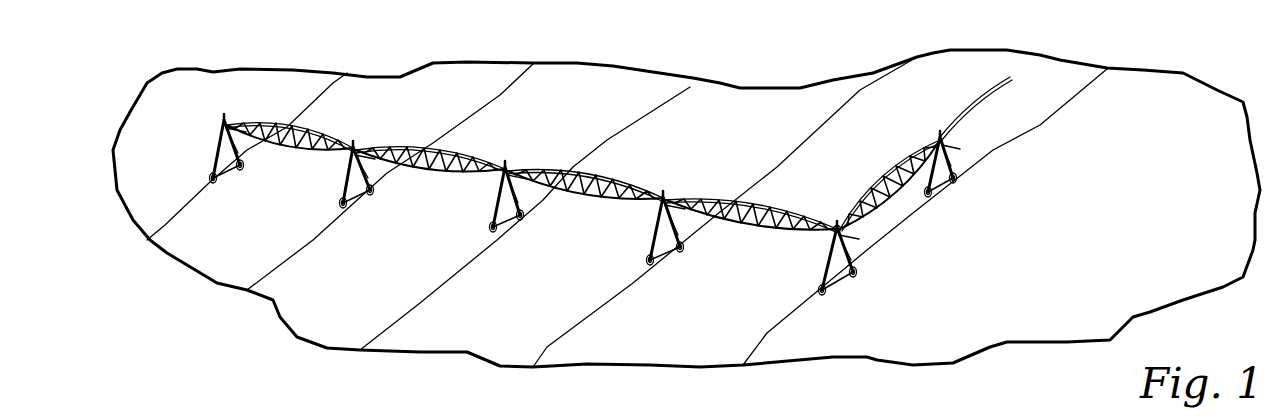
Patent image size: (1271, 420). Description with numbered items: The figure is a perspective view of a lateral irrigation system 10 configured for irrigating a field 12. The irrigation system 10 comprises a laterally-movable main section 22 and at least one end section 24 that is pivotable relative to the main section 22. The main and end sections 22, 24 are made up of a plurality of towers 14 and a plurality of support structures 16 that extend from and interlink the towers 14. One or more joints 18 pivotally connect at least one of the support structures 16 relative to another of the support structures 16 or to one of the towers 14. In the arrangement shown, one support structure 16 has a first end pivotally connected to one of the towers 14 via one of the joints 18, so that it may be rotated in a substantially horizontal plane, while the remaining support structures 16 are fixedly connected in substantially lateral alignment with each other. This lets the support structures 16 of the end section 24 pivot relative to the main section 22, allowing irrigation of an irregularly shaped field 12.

The irrigation system 10 is at (707, 170).
The field 12 is at (627, 83).
The towers 14 is at (215, 168).
The support structures 16 is at (318, 130).
The joints 18 is at (837, 230).
The main section 22 is at (573, 220).
The end section 24 is at (910, 213).